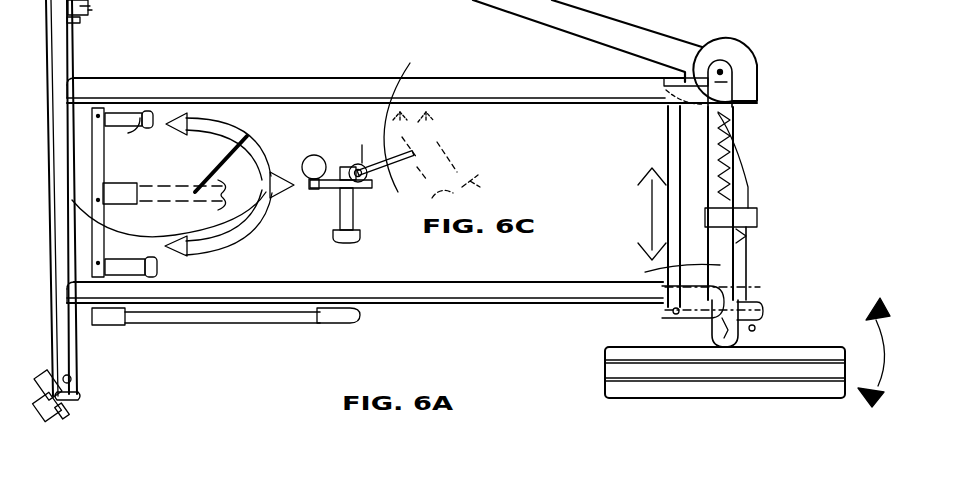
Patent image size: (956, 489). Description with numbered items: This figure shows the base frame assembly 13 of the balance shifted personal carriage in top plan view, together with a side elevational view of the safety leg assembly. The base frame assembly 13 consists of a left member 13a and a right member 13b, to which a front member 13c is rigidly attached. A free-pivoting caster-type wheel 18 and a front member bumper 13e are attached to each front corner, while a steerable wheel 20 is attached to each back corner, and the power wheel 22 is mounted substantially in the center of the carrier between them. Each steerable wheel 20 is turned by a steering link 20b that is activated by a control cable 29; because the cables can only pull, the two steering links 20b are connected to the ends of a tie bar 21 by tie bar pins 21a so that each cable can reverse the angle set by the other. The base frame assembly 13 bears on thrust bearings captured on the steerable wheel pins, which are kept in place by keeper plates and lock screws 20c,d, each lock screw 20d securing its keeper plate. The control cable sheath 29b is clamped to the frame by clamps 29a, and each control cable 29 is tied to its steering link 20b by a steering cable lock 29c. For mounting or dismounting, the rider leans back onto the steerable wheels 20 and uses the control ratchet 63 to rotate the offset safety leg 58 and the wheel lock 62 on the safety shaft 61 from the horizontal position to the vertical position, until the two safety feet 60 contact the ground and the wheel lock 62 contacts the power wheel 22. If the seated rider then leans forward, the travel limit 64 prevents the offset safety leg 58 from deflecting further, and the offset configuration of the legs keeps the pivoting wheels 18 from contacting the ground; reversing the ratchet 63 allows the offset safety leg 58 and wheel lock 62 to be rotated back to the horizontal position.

In FIG. 6A, the base frame assembly 13 is at (412, 90).
In FIG. 6C, the base frame assembly 13 is at (312, 156).
In FIG. 6A, the left member 13a is at (490, 298).
In FIG. 6A, the right member 13b is at (565, 95).
In FIG. 6A, the front member 13c is at (58, 55).
In FIG. 6A, the front member bumper 13e is at (85, 395).
In FIG. 6A, the free-pivoting caster-type wheel 18 is at (92, 5).
In FIG. 6A, the steerable wheel 20 is at (618, 387).
In FIG. 6A, the steering link 20b is at (767, 310).
In FIG. 6A, the keeper plates and lock screws 20c,d is at (728, 67).
In FIG. 6A, the lock screw 20d is at (747, 283).
In FIG. 6A, the tie bar 21 is at (668, 137).
In FIG. 6A, the tie bar pin 21a is at (670, 318).
In FIG. 6A, the power wheel 22 is at (183, 184).
In FIG. 6C, the power wheel 22 is at (437, 165).
In FIG. 6A, the control cable 29 is at (750, 265).
In FIG. 6A, the clamp 29a is at (756, 216).
In FIG. 6A, the control cable sheath 29b is at (732, 147).
In FIG. 6A, the steering cable lock 29c is at (758, 328).
In FIG. 6C, the offset safety leg 58 is at (352, 218).
In FIG. 6A, the safety foot 60 is at (157, 270).
In FIG. 6C, the safety foot 60 is at (333, 238).
In FIG. 6A, the safety shaft 61 is at (100, 110).
In FIG. 6C, the wheel lock 62 is at (386, 131).
In FIG. 6A, the control ratchet 63 is at (277, 318).
In FIG. 6A, the travel limit 64 is at (240, 228).
In FIG. 6C, the travel limit 64 is at (321, 188).